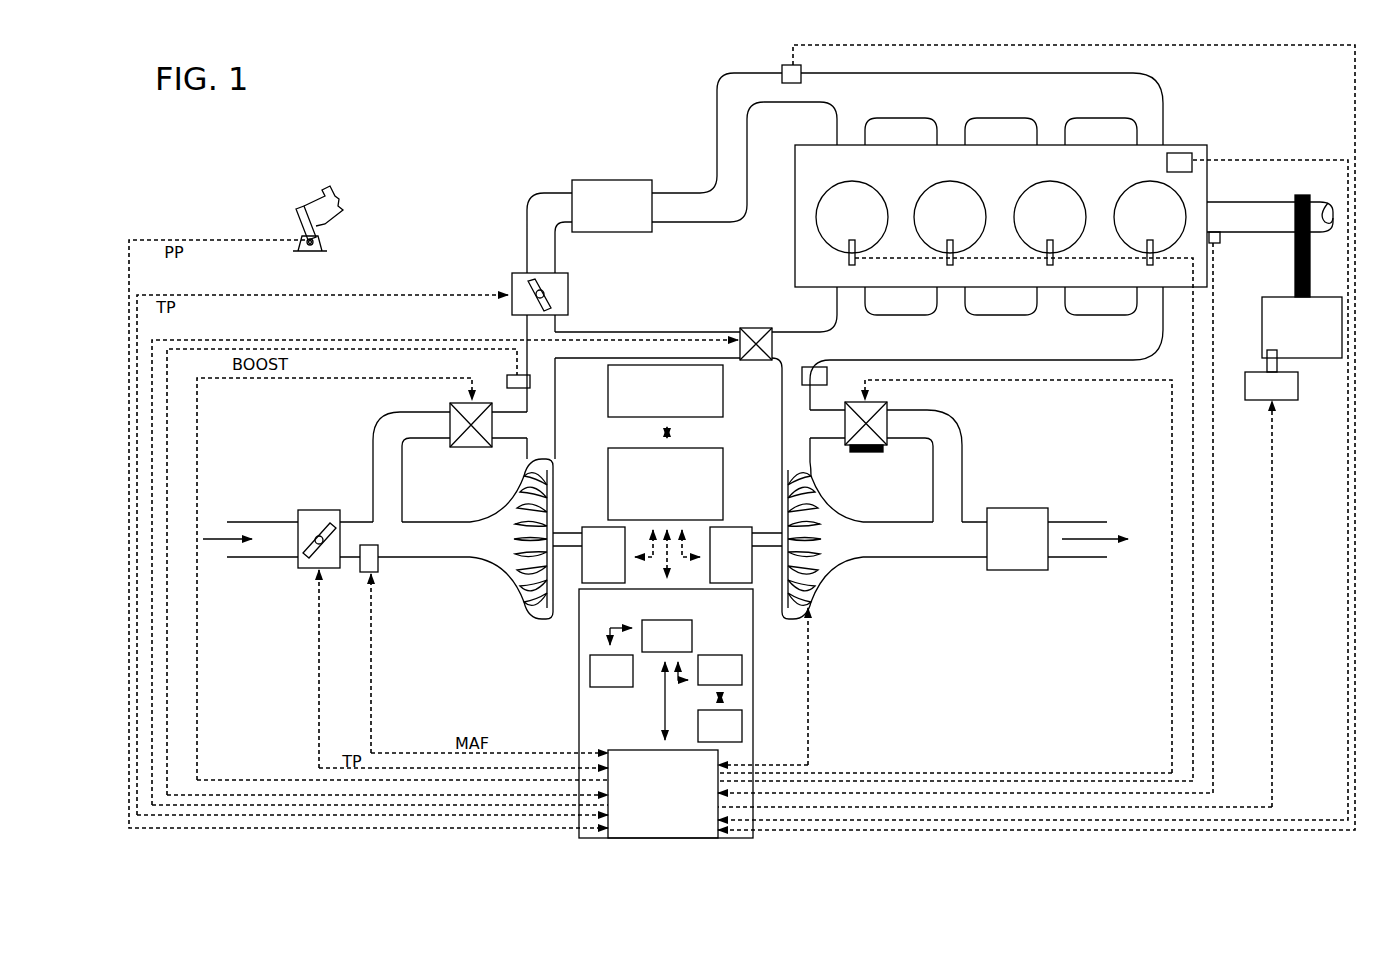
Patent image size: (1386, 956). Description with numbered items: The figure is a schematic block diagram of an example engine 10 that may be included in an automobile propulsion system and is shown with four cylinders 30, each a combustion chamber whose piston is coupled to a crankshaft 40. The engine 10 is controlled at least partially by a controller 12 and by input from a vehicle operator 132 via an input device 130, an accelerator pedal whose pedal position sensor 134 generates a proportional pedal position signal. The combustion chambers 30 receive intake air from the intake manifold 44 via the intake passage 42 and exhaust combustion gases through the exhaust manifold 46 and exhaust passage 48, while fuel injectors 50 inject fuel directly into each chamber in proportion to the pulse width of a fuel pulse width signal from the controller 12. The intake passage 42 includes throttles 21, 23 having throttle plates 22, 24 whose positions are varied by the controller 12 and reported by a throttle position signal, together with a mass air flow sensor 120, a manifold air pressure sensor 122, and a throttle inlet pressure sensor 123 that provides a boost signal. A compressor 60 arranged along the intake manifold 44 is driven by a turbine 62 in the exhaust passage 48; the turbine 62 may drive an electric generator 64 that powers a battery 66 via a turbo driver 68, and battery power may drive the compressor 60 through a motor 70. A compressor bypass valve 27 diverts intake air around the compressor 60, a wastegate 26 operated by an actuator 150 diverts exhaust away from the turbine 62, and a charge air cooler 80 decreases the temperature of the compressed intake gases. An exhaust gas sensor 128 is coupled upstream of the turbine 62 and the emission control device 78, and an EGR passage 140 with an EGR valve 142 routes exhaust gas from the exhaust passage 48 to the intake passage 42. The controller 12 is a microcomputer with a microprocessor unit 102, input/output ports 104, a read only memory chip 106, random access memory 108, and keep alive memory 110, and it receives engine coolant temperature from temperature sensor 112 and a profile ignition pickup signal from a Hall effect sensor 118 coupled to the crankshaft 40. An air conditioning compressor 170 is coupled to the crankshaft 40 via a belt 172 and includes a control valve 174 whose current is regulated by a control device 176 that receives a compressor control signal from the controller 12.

The engine 10 is at (1001, 216).
The controller 12 is at (666, 713).
The throttle 21 is at (310, 510).
The throttle plate 22 is at (325, 522).
The throttle 23 is at (520, 272).
The throttle plate 24 is at (548, 305).
The wastegate 26 is at (888, 408).
The compressor bypass valve 27 is at (450, 410).
The cylinder 30 is at (1001, 217).
The crankshaft 40 is at (1213, 202).
The intake passage 42 is at (336, 539).
The intake manifold 44 is at (907, 147).
The exhaust manifold 46 is at (967, 374).
The exhaust passage 48 is at (995, 539).
The fuel injector 50 is at (849, 262).
The compressor 60 is at (518, 578).
The turbine 62 is at (818, 495).
The electric generator 64 is at (731, 555).
The battery 66 is at (608, 392).
The turbo driver 68 is at (705, 448).
The motor 70 is at (603, 555).
The emission control device 78 is at (1017, 539).
The charge air cooler 80 is at (578, 180).
The microprocessor unit 102 is at (610, 628).
The input/output ports 104 is at (663, 794).
The read only memory chip 106 is at (590, 675).
The random access memory 108 is at (702, 655).
The keep alive memory 110 is at (698, 722).
The temperature sensor 112 is at (1185, 153).
The Hall effect sensor 118 is at (1218, 244).
The mass air flow sensor 120 is at (378, 565).
The manifold air pressure sensor 122 is at (783, 66).
The throttle inlet pressure sensor 123 is at (508, 376).
The exhaust gas sensor 128 is at (828, 376).
The input device 130 is at (298, 222).
The vehicle operator 132 is at (340, 206).
The pedal position sensor 134 is at (318, 243).
The EGR passage 140 is at (645, 339).
The EGR valve 142 is at (760, 328).
The actuator 150 is at (872, 452).
The air conditioning compressor 170 is at (1302, 327).
The belt 172 is at (1303, 195).
The control valve 174 is at (1278, 362).
The control device 176 is at (1009, 589).